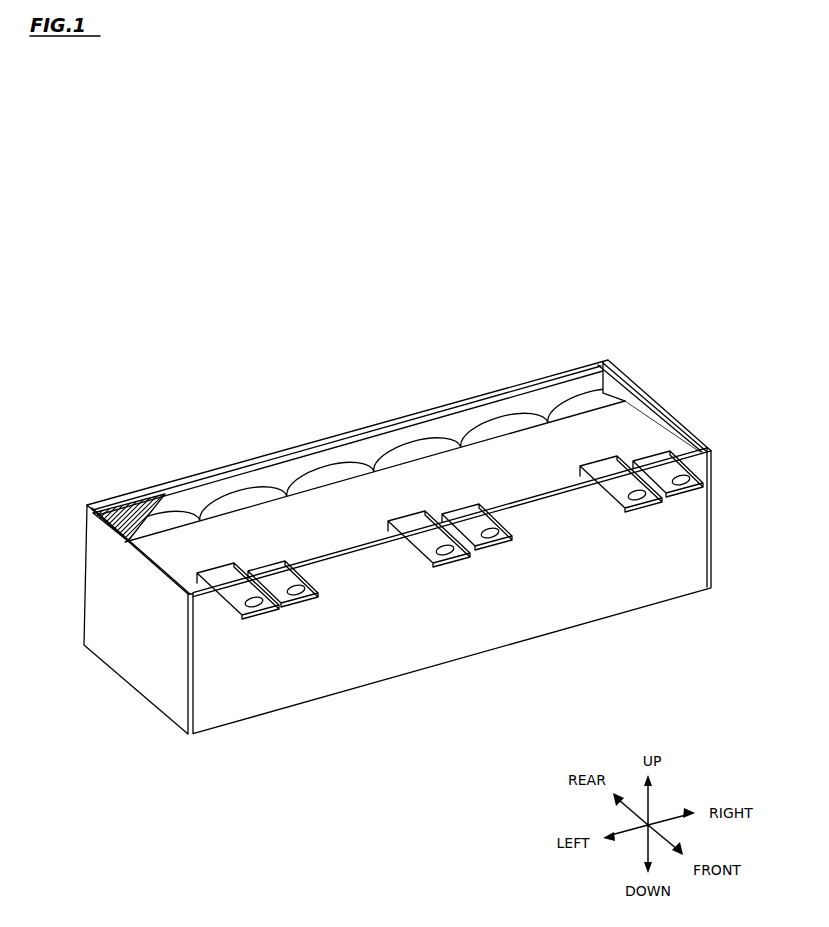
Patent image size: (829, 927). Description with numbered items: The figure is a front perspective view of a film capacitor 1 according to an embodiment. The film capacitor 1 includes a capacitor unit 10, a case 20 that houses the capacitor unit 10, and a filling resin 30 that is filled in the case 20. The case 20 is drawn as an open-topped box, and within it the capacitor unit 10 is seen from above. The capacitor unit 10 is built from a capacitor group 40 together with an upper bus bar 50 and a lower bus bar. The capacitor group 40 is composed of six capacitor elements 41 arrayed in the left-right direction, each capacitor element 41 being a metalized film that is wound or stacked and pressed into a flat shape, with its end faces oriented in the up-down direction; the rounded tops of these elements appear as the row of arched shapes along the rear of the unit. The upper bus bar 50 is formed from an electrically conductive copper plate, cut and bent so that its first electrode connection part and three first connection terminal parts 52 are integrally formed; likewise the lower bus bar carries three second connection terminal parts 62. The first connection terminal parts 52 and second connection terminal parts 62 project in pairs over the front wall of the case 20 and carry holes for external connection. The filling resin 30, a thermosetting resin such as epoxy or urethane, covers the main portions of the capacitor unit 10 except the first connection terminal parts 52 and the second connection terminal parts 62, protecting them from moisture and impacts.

The film capacitor 1 is at (161, 360).
The capacitor unit 10 is at (336, 500).
The case 20 is at (714, 534).
The filling resin 30 is at (127, 513).
The capacitor group 40 is at (443, 436).
The capacitor element 41 is at (583, 406).
The upper bus bar 50 is at (643, 432).
The first connection terminal part 52 is at (413, 522).
The second connection terminal part 62 is at (466, 513).